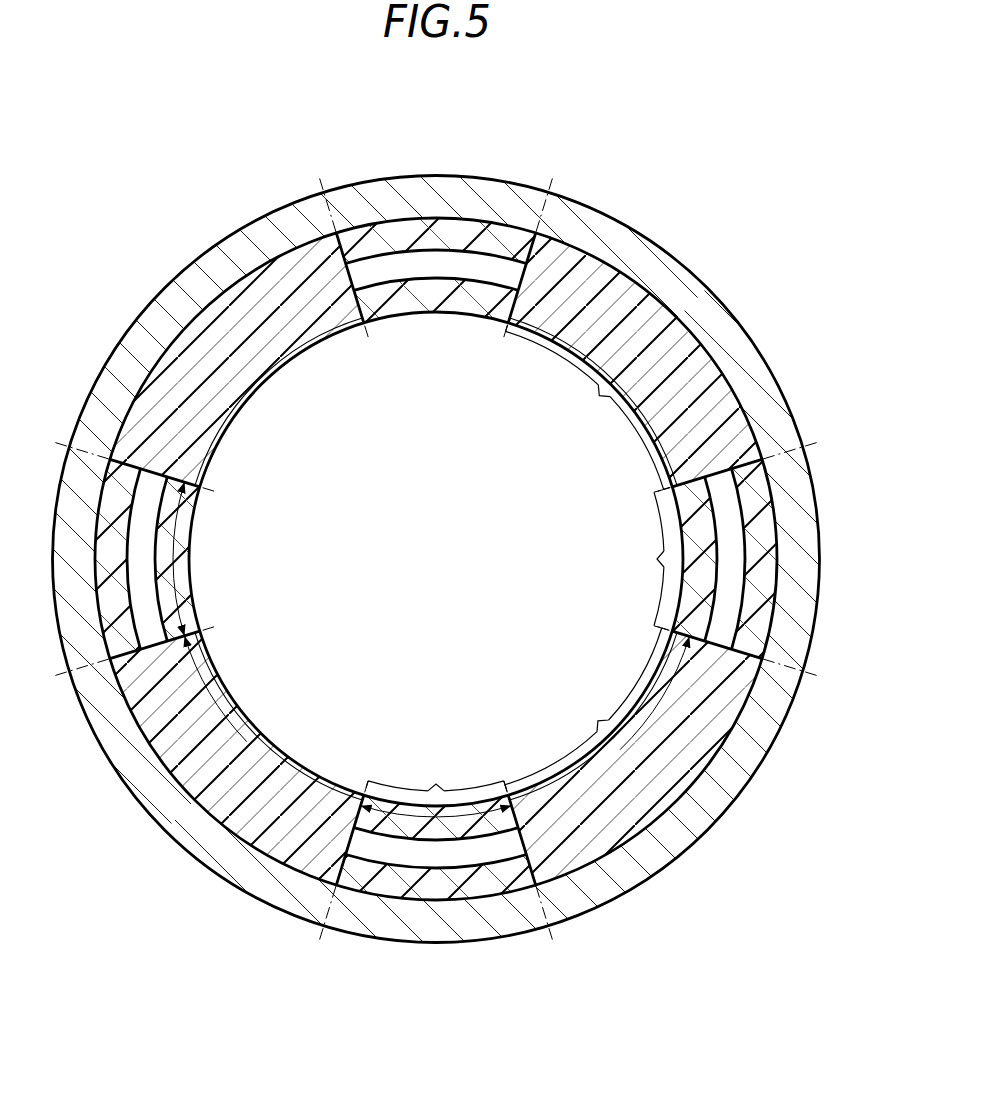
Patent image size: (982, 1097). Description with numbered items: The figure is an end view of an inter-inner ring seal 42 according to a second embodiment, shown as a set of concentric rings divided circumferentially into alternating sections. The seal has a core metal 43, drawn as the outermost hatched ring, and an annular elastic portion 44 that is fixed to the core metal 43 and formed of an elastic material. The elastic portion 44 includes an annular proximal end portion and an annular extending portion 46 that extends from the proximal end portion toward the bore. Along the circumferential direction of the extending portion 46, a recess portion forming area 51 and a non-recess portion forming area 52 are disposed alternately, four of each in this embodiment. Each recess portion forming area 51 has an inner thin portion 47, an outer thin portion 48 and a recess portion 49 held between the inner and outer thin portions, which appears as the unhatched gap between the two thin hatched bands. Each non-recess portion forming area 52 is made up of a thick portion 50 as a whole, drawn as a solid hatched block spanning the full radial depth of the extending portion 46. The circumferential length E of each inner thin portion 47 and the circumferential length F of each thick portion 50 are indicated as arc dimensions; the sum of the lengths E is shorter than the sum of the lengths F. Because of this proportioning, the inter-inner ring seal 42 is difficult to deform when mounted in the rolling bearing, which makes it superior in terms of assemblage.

The inter-inner ring seal 42 is at (628, 164).
The core metal 43 is at (716, 288).
The elastic portion 44 is at (636, 274).
The extending portion 46 is at (321, 349).
The inner thin portion 47 is at (467, 300).
The outer thin portion 48 is at (374, 242).
The recess portion 49 is at (426, 264).
The thick portion 50 is at (246, 389).
The recess portion forming area 51 is at (515, 640).
The non-recess portion forming area 52 is at (587, 558).
The circumferential length of the inner thin portion E is at (176, 531).
The circumferential length of the thick portion F is at (247, 741).